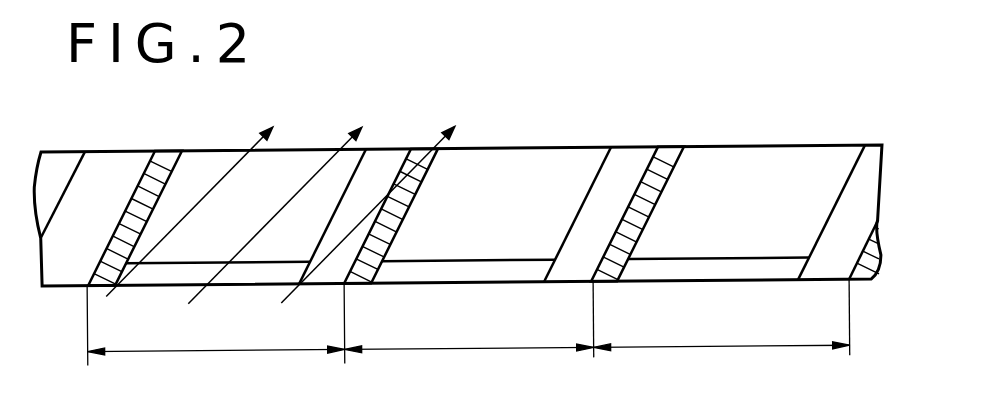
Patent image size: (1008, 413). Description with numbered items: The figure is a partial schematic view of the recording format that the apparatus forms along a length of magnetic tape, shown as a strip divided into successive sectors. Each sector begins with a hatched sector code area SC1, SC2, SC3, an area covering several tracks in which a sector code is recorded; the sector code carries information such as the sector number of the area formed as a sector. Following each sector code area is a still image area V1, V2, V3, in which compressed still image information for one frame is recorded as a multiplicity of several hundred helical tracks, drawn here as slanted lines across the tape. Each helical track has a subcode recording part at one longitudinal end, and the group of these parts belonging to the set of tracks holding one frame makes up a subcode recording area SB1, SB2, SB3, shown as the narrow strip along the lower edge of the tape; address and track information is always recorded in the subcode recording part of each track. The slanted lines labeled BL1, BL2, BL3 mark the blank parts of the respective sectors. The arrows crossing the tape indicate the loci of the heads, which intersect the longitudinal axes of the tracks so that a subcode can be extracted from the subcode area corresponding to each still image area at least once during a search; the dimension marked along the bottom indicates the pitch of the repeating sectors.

The sector code area SC1 is at (163, 156).
The sector code area SC2 is at (415, 155).
The sector code area SC3 is at (673, 158).
The still image area V1 is at (297, 159).
The still image area V2 is at (505, 166).
The still image area V3 is at (758, 164).
The blank part BL1 is at (380, 166).
The blank part BL2 is at (628, 165).
The blank part BL3 is at (873, 165).
The subcode recording area SB1 is at (244, 275).
The subcode recording area SB2 is at (513, 277).
The subcode recording area SB3 is at (775, 276).